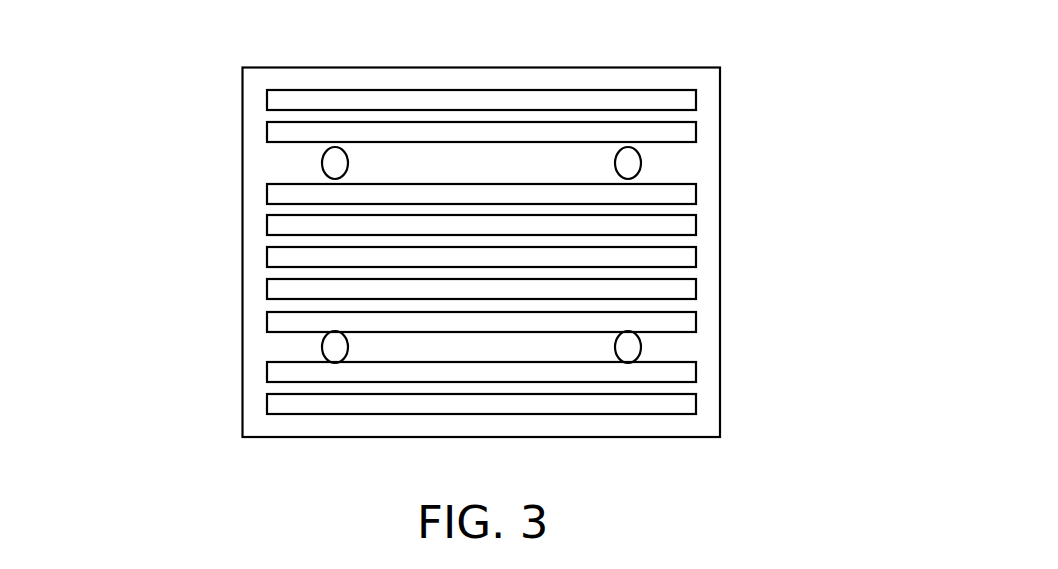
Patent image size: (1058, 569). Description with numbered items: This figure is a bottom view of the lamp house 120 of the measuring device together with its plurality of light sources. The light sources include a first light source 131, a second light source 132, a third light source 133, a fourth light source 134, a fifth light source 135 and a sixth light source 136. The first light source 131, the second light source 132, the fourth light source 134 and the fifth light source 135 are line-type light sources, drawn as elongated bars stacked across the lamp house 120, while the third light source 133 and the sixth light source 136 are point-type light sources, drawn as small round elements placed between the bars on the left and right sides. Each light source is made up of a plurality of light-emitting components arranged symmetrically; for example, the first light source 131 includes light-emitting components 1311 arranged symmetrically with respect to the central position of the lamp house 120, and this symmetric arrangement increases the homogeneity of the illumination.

The lamp house 120 is at (480, 67).
The first light source 131 is at (552, 257).
The light-emitting components 1311 is at (685, 226).
The second light source 132 is at (510, 258).
The third light source 133 is at (338, 160).
The fourth light source 134 is at (677, 133).
The fifth light source 135 is at (501, 252).
The sixth light source 136 is at (628, 163).